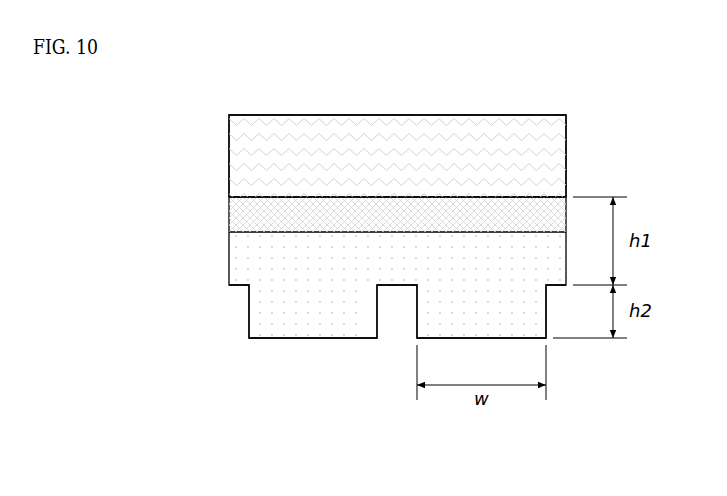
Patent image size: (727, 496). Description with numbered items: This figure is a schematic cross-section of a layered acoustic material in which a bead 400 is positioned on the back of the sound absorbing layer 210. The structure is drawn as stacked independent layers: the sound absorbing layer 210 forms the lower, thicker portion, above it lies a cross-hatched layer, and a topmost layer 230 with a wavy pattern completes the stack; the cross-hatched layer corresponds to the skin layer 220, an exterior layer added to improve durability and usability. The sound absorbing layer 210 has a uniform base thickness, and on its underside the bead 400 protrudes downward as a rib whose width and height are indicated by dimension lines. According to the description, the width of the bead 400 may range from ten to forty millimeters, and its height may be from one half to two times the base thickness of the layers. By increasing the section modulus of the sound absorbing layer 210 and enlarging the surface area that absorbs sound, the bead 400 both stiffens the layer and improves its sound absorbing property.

The sound absorbing layer 210 is at (263, 262).
The skin layer 220 is at (262, 215).
The upper layer 230 is at (257, 152).
The bead 400 is at (313, 313).